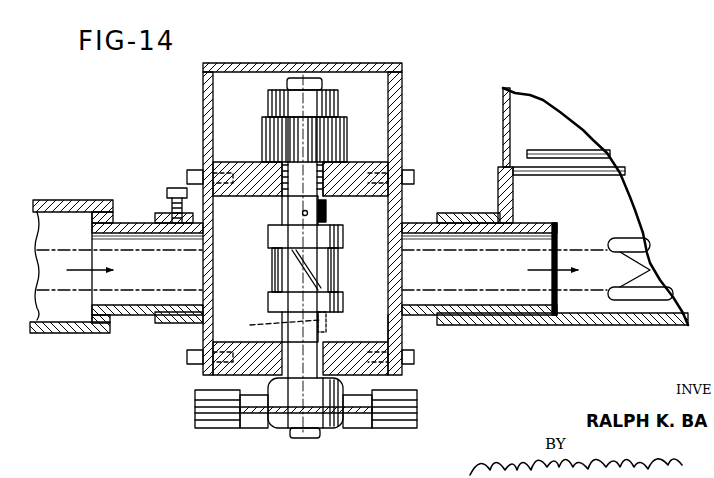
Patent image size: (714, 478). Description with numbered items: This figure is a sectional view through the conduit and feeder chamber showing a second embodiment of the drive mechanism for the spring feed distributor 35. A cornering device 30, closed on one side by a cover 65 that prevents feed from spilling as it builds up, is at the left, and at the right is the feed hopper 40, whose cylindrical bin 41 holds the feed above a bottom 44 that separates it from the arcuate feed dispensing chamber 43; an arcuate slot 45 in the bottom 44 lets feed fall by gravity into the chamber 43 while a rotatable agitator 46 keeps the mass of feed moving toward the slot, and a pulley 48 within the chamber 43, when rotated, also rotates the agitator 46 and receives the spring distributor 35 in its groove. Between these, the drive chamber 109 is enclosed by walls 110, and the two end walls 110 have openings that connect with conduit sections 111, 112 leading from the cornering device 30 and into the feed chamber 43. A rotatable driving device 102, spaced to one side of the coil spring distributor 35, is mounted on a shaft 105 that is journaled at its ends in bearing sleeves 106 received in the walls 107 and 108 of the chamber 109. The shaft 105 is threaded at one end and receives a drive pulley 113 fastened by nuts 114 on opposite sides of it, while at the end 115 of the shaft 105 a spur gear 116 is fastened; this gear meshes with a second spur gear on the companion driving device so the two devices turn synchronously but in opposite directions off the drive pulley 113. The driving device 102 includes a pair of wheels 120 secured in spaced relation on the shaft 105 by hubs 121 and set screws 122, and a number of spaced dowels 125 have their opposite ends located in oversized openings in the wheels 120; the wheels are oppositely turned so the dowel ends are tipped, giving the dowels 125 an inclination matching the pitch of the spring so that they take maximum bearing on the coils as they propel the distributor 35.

The cornering device 30 is at (62, 337).
The spring feed distributor 35 is at (120, 292).
The feed hopper 40 is at (530, 80).
The cylindrical bin 41 is at (503, 120).
The feed dispensing chamber 43 is at (588, 310).
The bottom 44 is at (498, 150).
The arcuate slot 45 is at (612, 170).
The rotatable agitator 46 is at (577, 152).
The pulley 48 is at (640, 243).
The cover 65 is at (48, 200).
The rotatable driving device 102 is at (348, 238).
The shaft 105 is at (313, 175).
The bearing sleeves 106 is at (284, 176).
The wall 107 is at (225, 162).
The wall 108 is at (213, 375).
The chamber 109 is at (382, 323).
The walls 110 is at (203, 90).
The conduit section 111 is at (133, 222).
The conduit section 112 is at (487, 310).
The drive pulley 113 is at (205, 420).
The nuts 114 is at (300, 418).
The end of the shaft 115 is at (305, 83).
The spur gear 116 is at (262, 120).
The wheels 120 is at (270, 240).
The hubs 121 is at (330, 212).
The set screws 122 is at (302, 213).
The dowels 125 is at (303, 283).